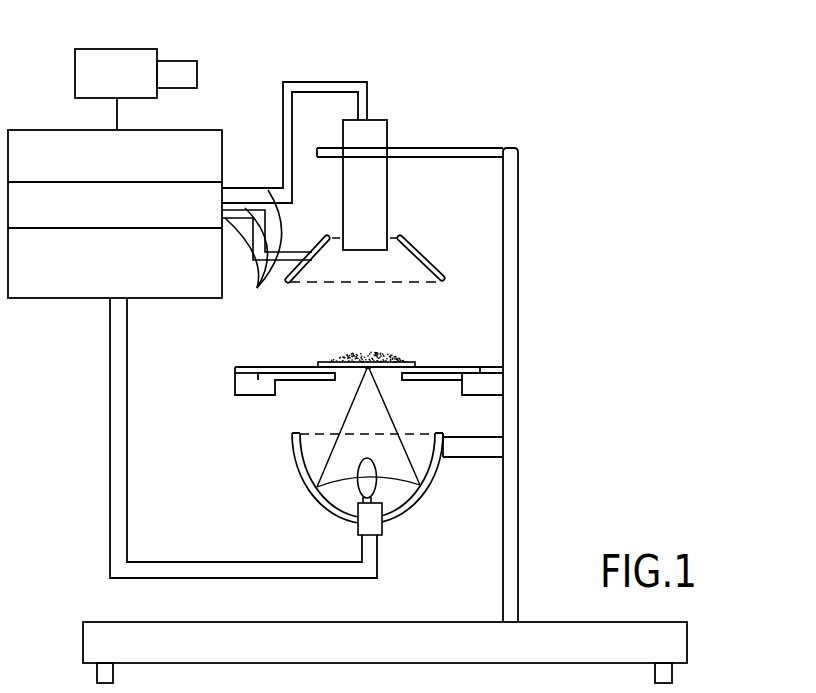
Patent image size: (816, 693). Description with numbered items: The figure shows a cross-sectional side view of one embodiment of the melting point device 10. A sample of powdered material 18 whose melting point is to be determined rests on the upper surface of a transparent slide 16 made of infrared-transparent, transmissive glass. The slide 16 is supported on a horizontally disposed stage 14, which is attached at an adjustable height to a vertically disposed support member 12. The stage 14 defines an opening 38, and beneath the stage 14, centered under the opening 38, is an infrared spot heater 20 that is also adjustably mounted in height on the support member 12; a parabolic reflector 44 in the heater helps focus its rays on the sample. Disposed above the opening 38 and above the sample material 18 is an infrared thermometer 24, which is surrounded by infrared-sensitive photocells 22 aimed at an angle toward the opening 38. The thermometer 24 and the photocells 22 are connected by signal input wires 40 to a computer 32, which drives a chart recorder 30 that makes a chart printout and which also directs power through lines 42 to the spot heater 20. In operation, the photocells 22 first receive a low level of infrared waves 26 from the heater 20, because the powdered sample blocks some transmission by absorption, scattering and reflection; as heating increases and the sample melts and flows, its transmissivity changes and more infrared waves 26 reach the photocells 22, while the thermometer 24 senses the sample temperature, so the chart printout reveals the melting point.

The analysis system 10 is at (577, 237).
The support member 12 is at (507, 330).
The stage 14 is at (452, 373).
The transparent slide 16 is at (323, 362).
The powdered material 18 is at (403, 352).
The infrared spot heater 20 is at (417, 503).
The infrared-sensitive photocells 22 is at (418, 243).
The infrared thermometer 24 is at (375, 202).
The infrared waves 26 is at (340, 428).
The chart recorder 30 is at (177, 75).
The computer 32 is at (210, 140).
The opening 38 is at (385, 375).
The signal input wires 40 is at (267, 252).
The power lines 42 is at (128, 420).
The parabolic reflector 44 is at (302, 477).